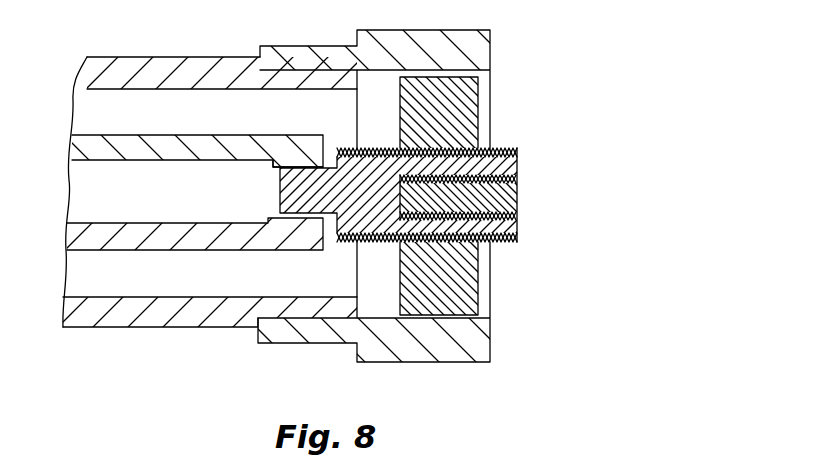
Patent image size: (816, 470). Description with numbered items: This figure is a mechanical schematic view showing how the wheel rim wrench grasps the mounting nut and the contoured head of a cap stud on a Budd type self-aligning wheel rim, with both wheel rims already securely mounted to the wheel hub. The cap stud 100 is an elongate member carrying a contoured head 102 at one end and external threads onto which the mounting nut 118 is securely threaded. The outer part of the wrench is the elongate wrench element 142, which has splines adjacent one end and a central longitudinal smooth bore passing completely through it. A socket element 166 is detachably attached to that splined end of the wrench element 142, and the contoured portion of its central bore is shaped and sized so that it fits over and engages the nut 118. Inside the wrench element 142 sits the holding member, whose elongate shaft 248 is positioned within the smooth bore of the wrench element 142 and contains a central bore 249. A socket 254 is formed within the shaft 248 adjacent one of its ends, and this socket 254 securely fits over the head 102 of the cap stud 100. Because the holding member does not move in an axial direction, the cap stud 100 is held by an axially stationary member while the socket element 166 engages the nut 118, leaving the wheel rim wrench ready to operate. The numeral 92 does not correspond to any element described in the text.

The socket element 166 is at (470, 50).
The mounting nut 118 is at (478, 98).
The contoured head 102 is at (298, 193).
The center pin 92 is at (500, 198).
The cap stud 100 is at (517, 228).
The socket 254 is at (266, 165).
The central bore 249 is at (114, 187).
The elongate shaft 248 is at (170, 240).
The wrench element 142 is at (193, 318).